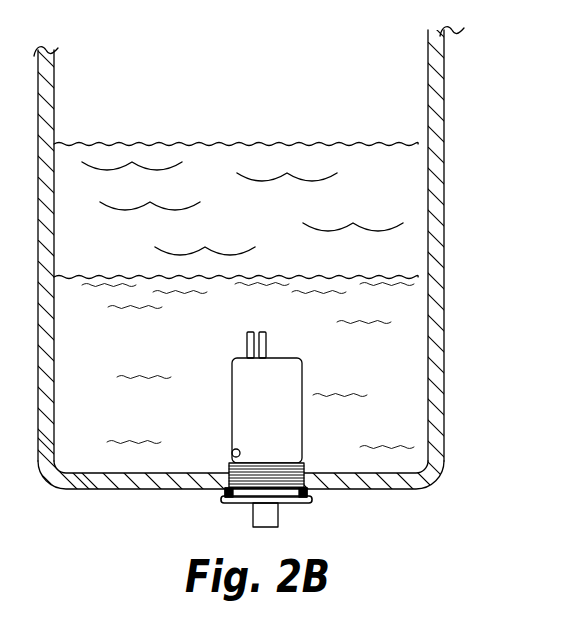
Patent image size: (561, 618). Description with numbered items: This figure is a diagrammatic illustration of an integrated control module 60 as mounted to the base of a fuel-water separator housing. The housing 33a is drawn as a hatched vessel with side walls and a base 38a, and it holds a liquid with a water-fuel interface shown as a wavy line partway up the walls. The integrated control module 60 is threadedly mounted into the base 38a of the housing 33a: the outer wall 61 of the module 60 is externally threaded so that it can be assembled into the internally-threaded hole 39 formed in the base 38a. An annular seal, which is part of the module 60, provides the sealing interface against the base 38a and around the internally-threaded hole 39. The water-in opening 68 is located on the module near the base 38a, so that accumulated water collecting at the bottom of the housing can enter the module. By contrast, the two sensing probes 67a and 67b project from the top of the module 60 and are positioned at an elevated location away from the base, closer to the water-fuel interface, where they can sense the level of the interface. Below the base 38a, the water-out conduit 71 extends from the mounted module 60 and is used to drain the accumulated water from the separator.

The housing 33a is at (441, 98).
The base 38a is at (143, 483).
The integrated control module 60 is at (287, 433).
The outer wall 61 is at (283, 473).
The sensing probe 67a is at (246, 334).
The sensing probe 67b is at (267, 342).
The water-in opening 68 is at (233, 451).
The internally-threaded hole 39 is at (308, 480).
The water-out conduit 71 is at (261, 517).